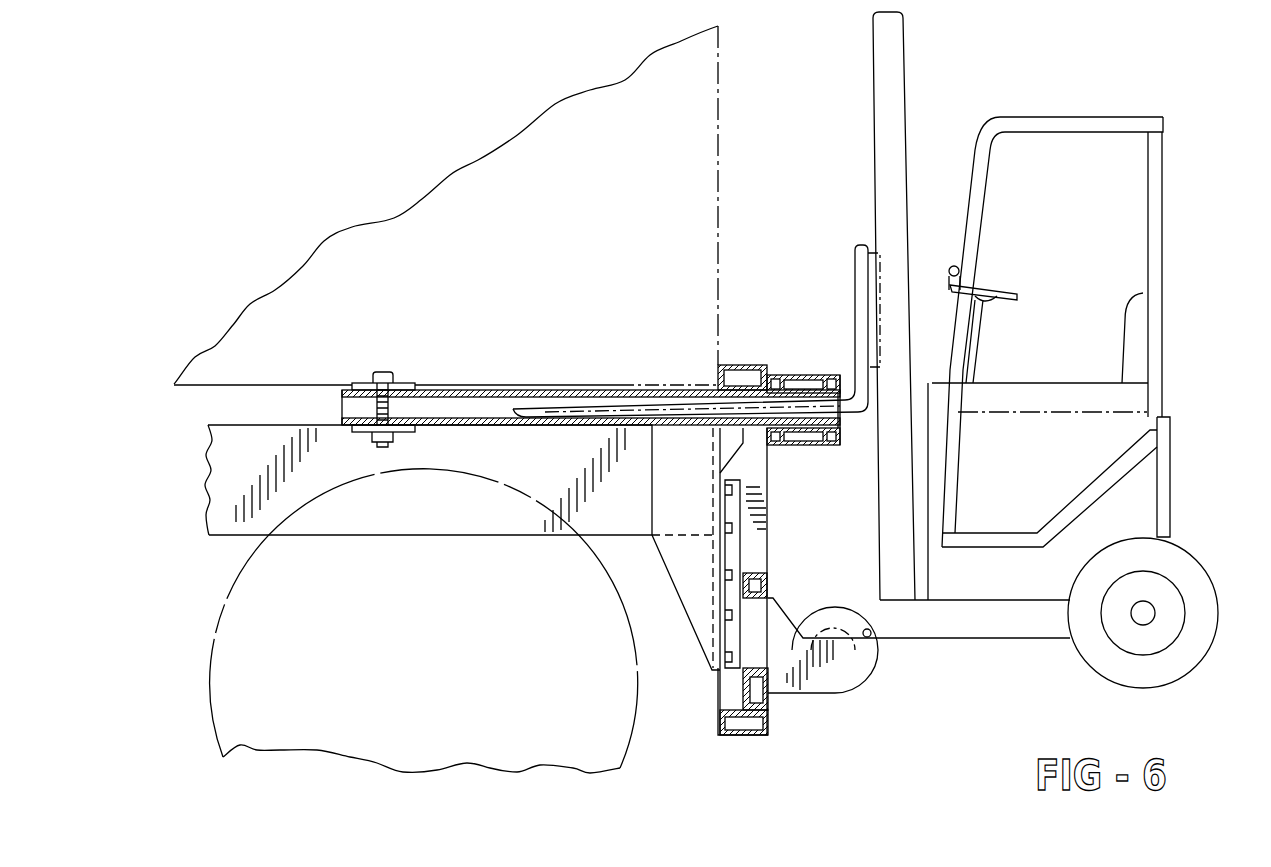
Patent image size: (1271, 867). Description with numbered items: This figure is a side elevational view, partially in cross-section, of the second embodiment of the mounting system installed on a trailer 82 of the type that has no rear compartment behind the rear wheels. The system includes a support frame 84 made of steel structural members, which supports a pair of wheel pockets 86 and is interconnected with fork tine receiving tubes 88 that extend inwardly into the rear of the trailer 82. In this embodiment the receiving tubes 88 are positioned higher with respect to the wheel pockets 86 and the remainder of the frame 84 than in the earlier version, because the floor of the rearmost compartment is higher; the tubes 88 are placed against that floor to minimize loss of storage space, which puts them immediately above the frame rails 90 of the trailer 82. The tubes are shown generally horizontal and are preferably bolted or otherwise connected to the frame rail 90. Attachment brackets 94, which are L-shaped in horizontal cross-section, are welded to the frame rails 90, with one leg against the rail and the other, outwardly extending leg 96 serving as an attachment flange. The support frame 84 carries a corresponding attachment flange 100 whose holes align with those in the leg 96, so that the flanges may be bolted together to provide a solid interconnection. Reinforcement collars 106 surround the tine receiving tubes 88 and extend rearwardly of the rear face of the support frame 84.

The trailer 82 is at (438, 101).
The support frame 84 is at (741, 365).
The wheel pocket 86 is at (850, 668).
The fork tine receiving tube 88 is at (614, 390).
The frame rail 90 is at (631, 522).
The attachment bracket 94 is at (690, 597).
The outwardly extending leg 96 is at (713, 628).
The attachment flange 100 is at (727, 560).
The reinforcement collar 106 is at (797, 375).